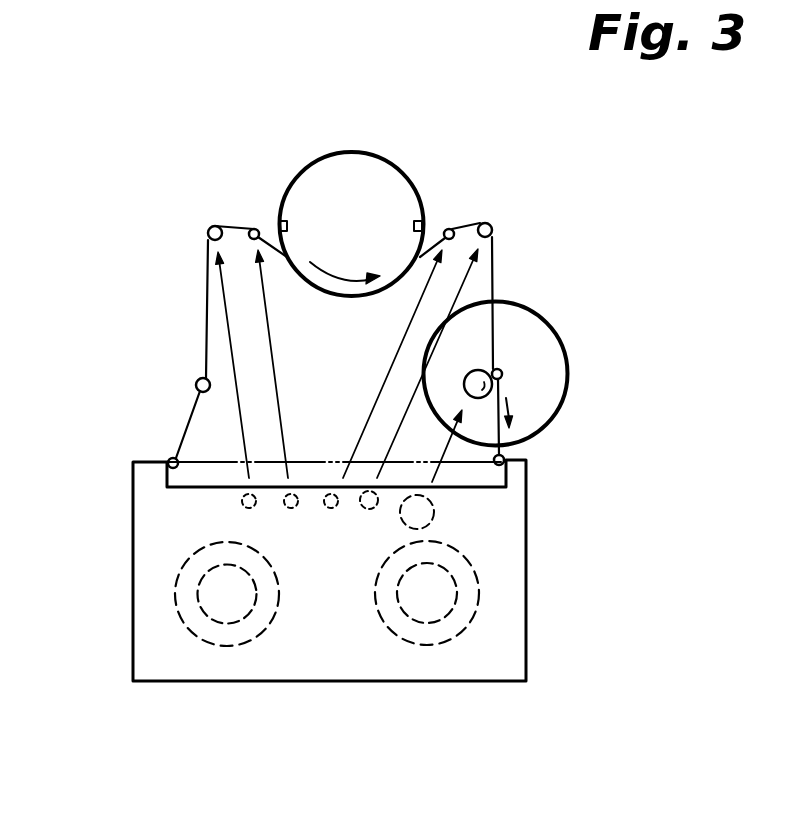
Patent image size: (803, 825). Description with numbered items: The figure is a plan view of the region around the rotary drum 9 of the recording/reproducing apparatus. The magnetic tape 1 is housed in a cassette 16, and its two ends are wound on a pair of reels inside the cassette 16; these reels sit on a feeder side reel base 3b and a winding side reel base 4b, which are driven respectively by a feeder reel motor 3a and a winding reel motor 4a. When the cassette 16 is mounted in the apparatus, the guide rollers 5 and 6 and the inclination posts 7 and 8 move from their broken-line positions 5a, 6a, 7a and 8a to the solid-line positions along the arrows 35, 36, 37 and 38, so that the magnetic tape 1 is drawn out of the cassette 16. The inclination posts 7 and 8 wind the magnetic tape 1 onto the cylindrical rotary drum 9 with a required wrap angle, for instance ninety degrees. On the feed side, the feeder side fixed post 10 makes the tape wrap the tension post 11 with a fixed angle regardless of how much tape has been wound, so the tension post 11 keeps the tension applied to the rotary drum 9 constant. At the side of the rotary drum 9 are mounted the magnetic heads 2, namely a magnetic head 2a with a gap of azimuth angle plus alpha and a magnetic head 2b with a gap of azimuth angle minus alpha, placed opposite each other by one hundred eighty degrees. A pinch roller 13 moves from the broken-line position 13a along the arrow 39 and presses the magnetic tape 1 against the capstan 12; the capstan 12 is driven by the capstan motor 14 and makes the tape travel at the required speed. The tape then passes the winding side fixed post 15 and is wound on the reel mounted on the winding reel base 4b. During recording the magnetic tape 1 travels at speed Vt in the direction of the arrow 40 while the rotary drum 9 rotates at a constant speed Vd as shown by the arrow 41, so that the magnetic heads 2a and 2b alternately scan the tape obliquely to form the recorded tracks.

The magnetic tape 1 is at (207, 283).
The magnetic heads 2 is at (363, 139).
The magnetic head 2a is at (288, 226).
The magnetic head 2b is at (418, 225).
The feeder reel motor 3a is at (183, 568).
The feeder side reel base 3b is at (218, 602).
The winding reel motor 4a is at (475, 578).
The winding side reel base 4b is at (435, 597).
The guide roller 5 is at (210, 227).
The position of guide roller 5a is at (249, 501).
The guide roller 6 is at (488, 224).
The position of guide roller 6a is at (371, 502).
The inclination post 7 is at (250, 229).
The position of inclination post 7a is at (291, 501).
The inclination post 8 is at (450, 228).
The position of inclination post 8a is at (331, 501).
The rotary drum 9 is at (310, 173).
The feeder side fixed post 10 is at (170, 460).
The tension post 11 is at (198, 380).
The capstan 12 is at (502, 372).
The pinch roller 13 is at (480, 372).
The position of pinch roller 13a is at (432, 510).
The capstan motor 14 is at (555, 372).
The winding side fixed post 15 is at (505, 458).
The cassette 16 is at (133, 517).
The arrow 35 is at (247, 437).
The arrow 36 is at (392, 445).
The arrow 37 is at (273, 360).
The arrow 38 is at (393, 365).
The arrow 39 is at (450, 434).
The arrow 40 is at (510, 406).
The arrow 41 is at (340, 280).